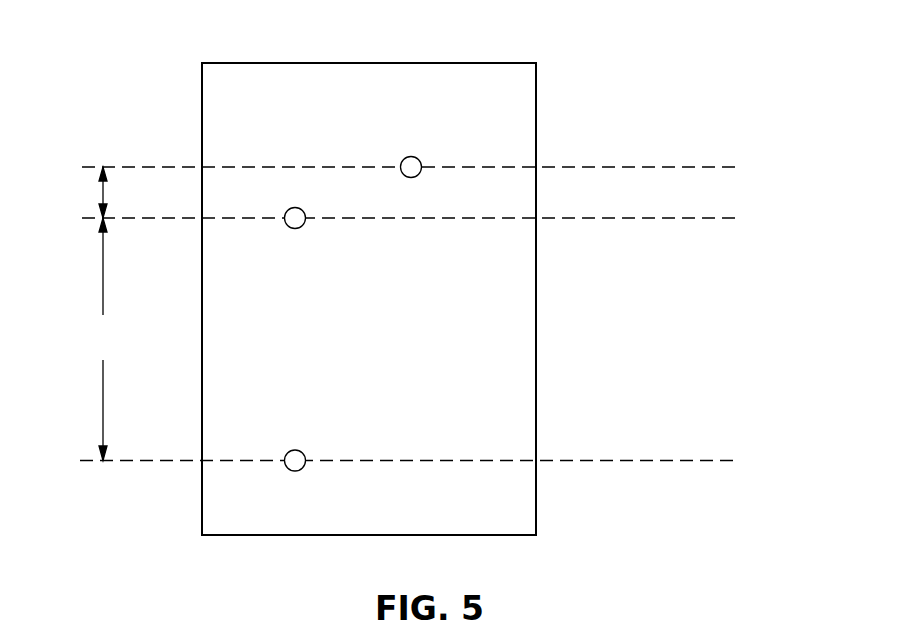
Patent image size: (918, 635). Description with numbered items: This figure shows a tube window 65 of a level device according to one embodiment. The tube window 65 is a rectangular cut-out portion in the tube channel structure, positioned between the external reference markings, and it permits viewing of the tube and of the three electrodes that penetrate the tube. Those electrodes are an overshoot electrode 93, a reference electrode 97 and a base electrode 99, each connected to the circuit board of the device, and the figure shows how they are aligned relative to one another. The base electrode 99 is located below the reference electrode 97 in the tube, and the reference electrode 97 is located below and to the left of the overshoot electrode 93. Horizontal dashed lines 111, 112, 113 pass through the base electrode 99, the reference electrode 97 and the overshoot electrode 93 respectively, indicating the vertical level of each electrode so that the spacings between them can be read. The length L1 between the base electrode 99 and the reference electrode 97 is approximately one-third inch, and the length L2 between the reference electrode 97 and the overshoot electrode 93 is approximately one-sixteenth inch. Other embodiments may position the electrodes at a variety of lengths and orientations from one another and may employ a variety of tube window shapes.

The tube window 65 is at (477, 63).
The overshoot electrode 93 is at (413, 156).
The reference electrode 97 is at (293, 229).
The base electrode 99 is at (297, 450).
The reference line 111 is at (711, 460).
The reference line 112 is at (712, 219).
The reference line 113 is at (716, 167).
The length between base electrode and reference electrode L1 is at (102, 339).
The length between reference electrode and overshoot electrode L2 is at (102, 193).